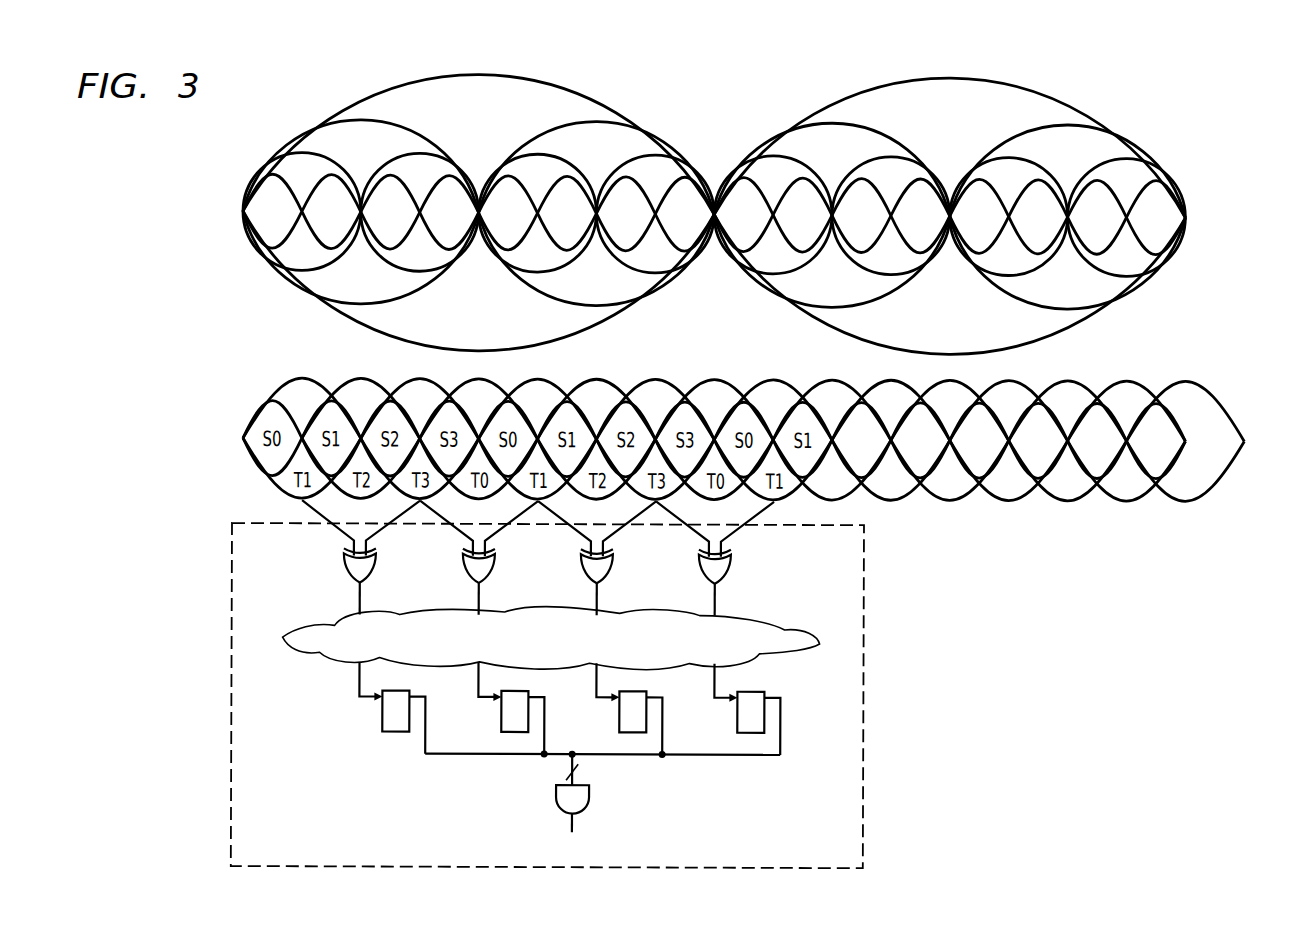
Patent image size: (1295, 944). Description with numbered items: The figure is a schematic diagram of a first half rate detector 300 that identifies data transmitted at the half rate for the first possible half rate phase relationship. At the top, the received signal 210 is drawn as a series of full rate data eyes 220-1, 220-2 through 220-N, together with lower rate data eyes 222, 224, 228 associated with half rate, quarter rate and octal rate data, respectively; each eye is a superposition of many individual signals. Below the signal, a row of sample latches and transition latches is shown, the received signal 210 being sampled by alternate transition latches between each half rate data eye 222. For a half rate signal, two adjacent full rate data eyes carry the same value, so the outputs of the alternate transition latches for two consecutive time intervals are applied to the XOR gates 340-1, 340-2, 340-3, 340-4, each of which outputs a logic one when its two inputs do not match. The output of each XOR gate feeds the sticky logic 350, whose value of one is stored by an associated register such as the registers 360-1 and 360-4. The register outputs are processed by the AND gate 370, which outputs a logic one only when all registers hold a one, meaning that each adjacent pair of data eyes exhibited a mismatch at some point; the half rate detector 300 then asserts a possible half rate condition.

The received signal 210 is at (721, 214).
The full rate data eye 220-1 is at (262, 198).
The full rate data eye 220-2 is at (331, 230).
The full rate data eye 220-N is at (1163, 223).
The half rate data eye 222 is at (300, 134).
The quarter rate data eye 224 is at (410, 126).
The octal rate data eye 228 is at (606, 110).
The half rate detector 300 is at (864, 606).
The XOR gate 340-1 is at (345, 565).
The XOR gate 340-2 is at (464, 565).
The XOR gate 340-3 is at (583, 566).
The XOR gate 340-4 is at (701, 566).
The sticky logic 350 is at (317, 642).
The register 360-1 is at (383, 717).
The register 360-4 is at (765, 697).
The AND gate 370 is at (592, 789).